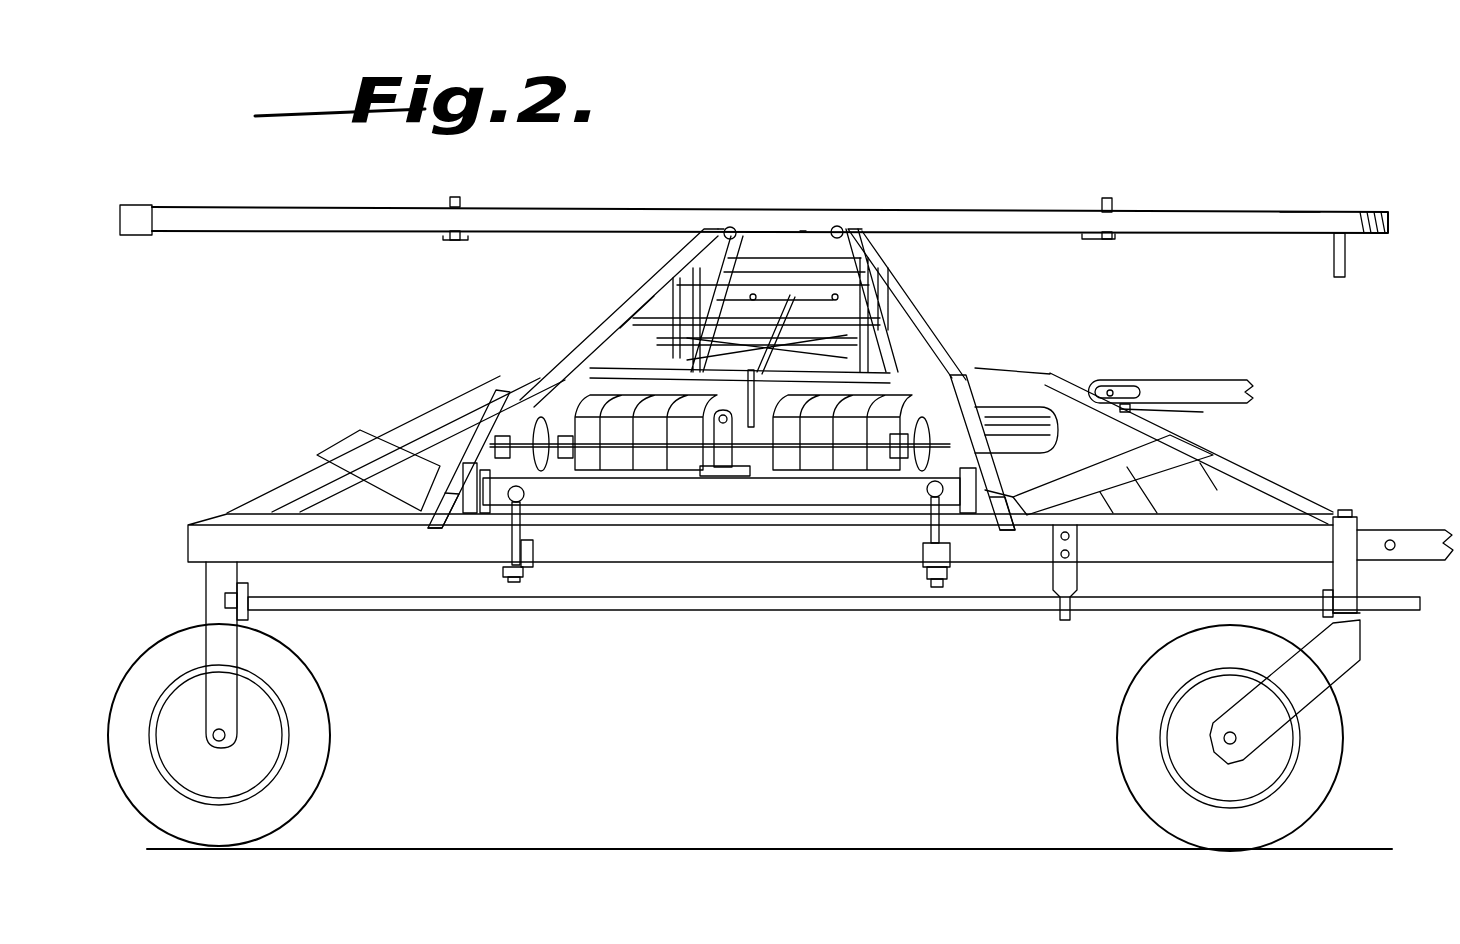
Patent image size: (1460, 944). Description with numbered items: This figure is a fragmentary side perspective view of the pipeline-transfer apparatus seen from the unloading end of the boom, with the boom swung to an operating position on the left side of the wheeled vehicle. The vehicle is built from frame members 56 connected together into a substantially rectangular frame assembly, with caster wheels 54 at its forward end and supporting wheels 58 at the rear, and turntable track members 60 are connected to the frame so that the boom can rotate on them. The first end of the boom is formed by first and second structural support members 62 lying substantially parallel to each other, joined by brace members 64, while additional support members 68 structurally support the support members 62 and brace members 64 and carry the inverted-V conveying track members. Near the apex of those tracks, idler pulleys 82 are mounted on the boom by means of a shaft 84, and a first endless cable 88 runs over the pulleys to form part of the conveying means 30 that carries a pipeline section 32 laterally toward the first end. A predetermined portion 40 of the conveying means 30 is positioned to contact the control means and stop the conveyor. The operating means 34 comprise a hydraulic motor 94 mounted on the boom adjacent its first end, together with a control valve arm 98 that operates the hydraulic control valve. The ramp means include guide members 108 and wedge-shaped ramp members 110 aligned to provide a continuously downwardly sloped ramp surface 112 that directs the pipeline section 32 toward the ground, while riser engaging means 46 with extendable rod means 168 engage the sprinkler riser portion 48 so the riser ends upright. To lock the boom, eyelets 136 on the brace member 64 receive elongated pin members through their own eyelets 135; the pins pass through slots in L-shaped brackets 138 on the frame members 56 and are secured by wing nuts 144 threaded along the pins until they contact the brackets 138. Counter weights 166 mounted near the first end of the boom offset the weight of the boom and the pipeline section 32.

The conveying means 30 is at (1082, 240).
The pipeline section 32 is at (1295, 223).
The operating means 34 is at (1147, 410).
The predetermined portion of conveying means 40 is at (862, 241).
The sprinkler riser engaging means 46 is at (1395, 607).
The sprinkler riser portion 48 is at (1350, 258).
The caster wheels 54 is at (1325, 715).
The frame members 56 is at (283, 470).
The supporting wheels 58 is at (280, 650).
The turntable track members 60 is at (378, 433).
The first structural support member 62 is at (892, 365).
The brace members 64 is at (680, 497).
The additional support members 68 is at (600, 340).
The additional idler pulley 82 is at (845, 231).
The shaft 84 is at (806, 231).
The first endless cable 88 is at (880, 300).
The hydraulic motor 94 is at (1013, 477).
The control valve arm 98 is at (813, 433).
The first guide member 108 is at (1017, 532).
The first wedge-shaped ramp member 110 is at (1057, 428).
The ramp surface 112 is at (1003, 387).
The eyelet 135 is at (923, 513).
The eyelet 136 is at (527, 488).
The L-shaped bracket 138 is at (927, 570).
The wing nut 144 is at (945, 612).
The counter weights 166 is at (647, 453).
The extendable rod means 168 is at (1127, 607).